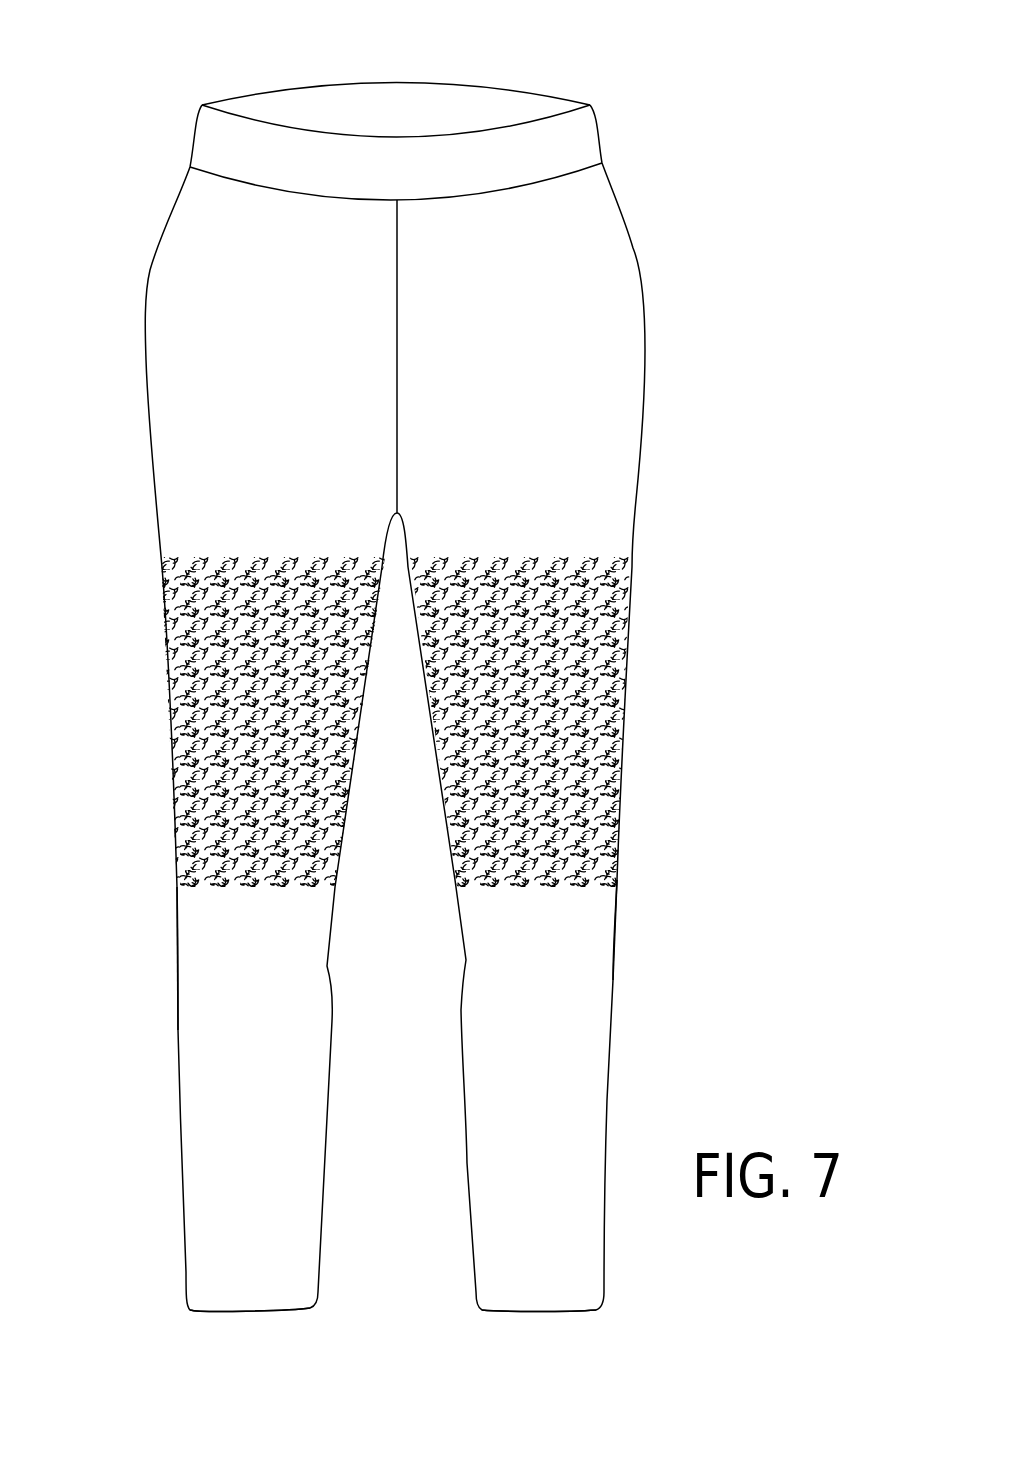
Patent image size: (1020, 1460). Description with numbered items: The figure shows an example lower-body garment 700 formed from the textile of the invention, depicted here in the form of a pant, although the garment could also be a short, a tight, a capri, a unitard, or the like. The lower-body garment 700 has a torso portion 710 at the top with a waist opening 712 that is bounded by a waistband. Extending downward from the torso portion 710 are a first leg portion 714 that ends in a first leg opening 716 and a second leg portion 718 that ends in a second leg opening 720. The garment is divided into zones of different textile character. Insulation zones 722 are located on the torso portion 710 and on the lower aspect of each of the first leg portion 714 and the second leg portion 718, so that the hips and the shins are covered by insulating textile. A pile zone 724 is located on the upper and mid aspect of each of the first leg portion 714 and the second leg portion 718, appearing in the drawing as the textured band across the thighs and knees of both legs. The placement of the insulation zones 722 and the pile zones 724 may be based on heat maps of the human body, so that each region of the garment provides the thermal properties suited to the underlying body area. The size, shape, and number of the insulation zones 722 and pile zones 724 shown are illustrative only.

The lower-body garment 700 is at (389, 692).
The torso portion 710 is at (572, 268).
The waist opening 712 is at (395, 113).
The first leg portion 714 is at (232, 1008).
The first leg opening 716 is at (243, 1328).
The second leg portion 718 is at (560, 1008).
The second leg opening 720 is at (547, 1328).
The insulation zones 722 is at (246, 387).
The pile zone 724 is at (220, 723).